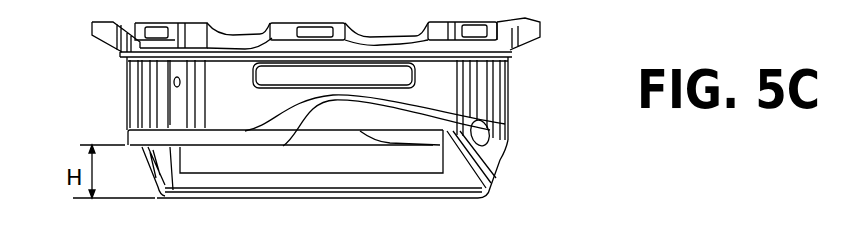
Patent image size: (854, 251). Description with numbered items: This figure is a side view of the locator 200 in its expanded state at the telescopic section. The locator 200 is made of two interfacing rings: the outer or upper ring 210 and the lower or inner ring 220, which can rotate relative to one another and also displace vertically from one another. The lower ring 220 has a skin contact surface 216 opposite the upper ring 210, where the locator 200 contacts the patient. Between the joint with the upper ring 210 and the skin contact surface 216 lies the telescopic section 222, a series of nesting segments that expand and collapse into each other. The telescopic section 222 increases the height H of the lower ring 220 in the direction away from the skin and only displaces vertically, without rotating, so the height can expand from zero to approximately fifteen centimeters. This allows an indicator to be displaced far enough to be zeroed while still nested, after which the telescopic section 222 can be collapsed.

The locator 200 is at (316, 81).
The outer ring 210 is at (485, 103).
The skin contact surface 216 is at (381, 200).
The lower ring 220 is at (165, 192).
The telescopic section 222 is at (298, 145).